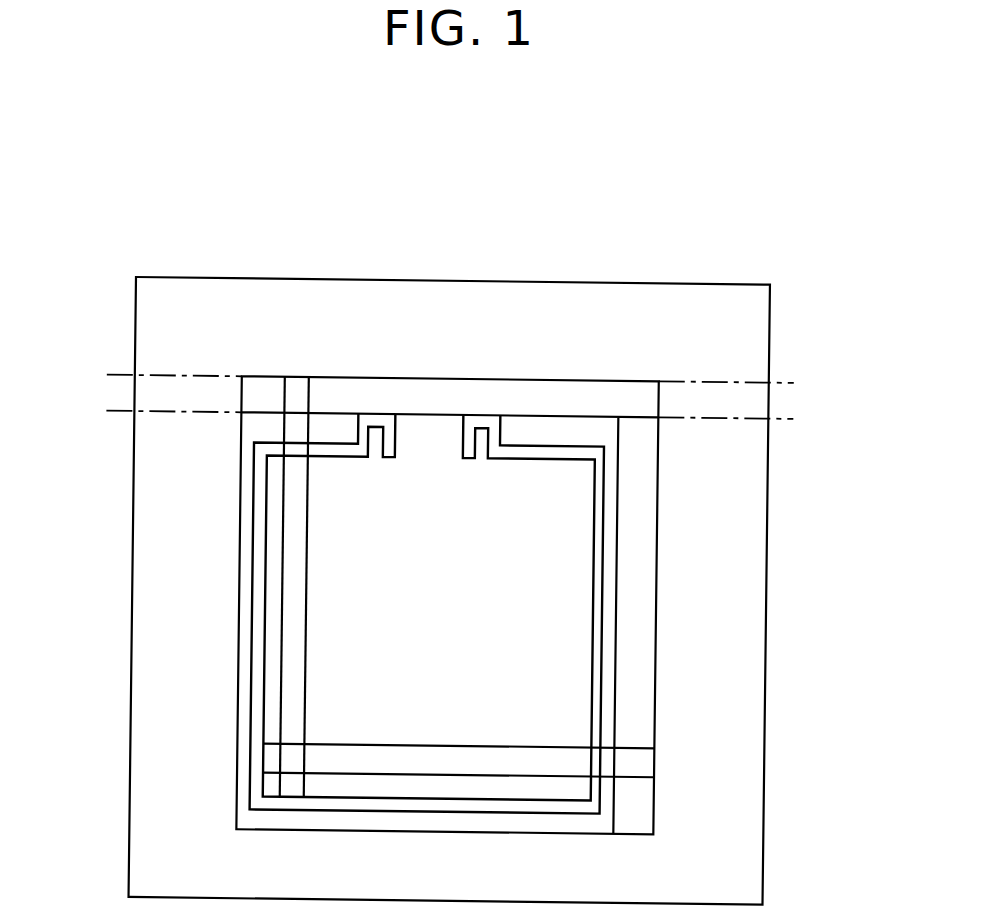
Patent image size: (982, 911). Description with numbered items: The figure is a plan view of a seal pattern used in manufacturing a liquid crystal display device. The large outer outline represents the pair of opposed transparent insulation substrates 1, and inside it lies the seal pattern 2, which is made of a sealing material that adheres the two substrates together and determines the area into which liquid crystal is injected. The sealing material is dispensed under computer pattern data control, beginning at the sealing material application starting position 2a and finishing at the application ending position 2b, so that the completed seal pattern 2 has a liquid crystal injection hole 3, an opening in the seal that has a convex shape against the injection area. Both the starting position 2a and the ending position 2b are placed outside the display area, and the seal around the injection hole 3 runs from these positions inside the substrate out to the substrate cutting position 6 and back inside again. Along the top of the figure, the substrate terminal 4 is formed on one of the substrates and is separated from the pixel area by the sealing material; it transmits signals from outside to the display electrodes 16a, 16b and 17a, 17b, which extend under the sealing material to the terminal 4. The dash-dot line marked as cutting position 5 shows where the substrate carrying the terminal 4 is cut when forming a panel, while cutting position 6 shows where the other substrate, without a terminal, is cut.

The transparent insulation substrates 1 is at (715, 577).
The seal pattern 2 is at (467, 612).
The sealing material application starting position 2a is at (388, 455).
The application ending position 2b is at (468, 458).
The liquid crystal injection hole 3 is at (428, 443).
The substrate terminal 4 is at (552, 400).
The cutting position 5 is at (787, 384).
The cutting position 6 is at (787, 421).
The display electrode 16a is at (283, 388).
The display electrode 16b is at (305, 387).
The display electrode 17a is at (640, 777).
The display electrode 17b is at (640, 748).